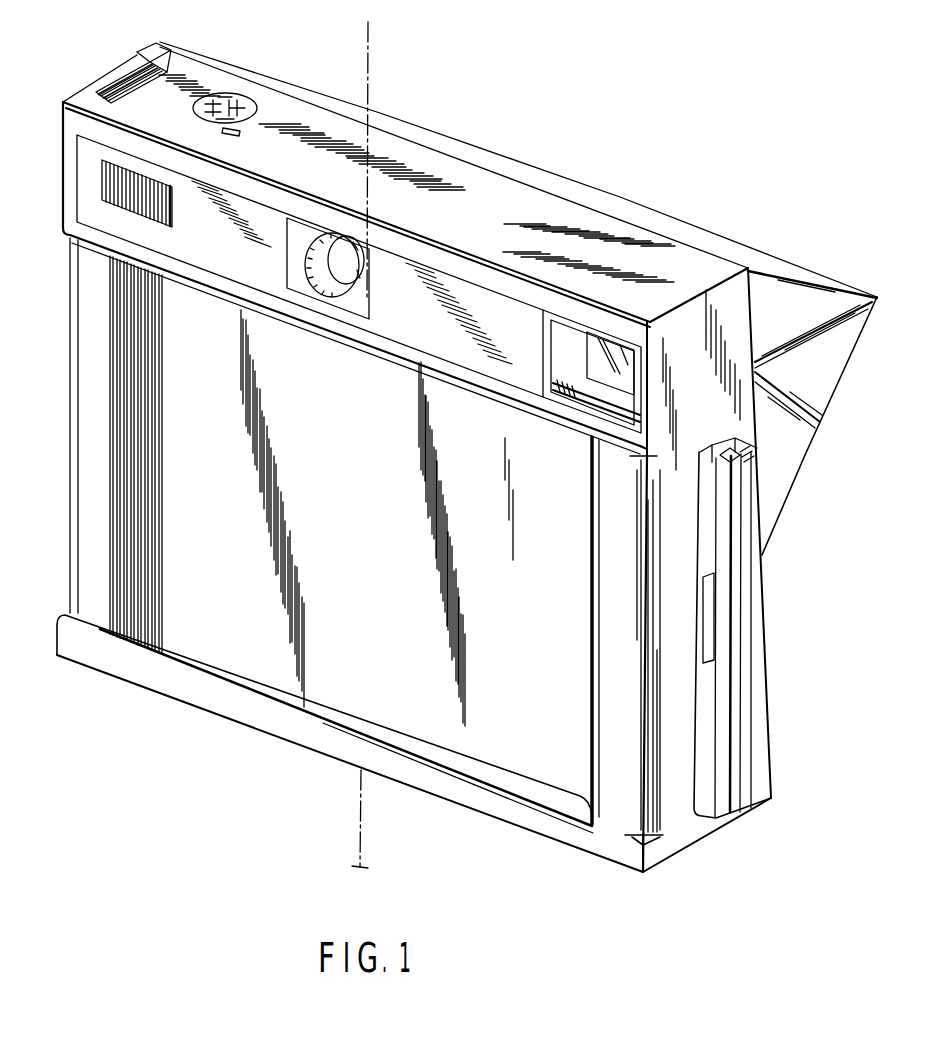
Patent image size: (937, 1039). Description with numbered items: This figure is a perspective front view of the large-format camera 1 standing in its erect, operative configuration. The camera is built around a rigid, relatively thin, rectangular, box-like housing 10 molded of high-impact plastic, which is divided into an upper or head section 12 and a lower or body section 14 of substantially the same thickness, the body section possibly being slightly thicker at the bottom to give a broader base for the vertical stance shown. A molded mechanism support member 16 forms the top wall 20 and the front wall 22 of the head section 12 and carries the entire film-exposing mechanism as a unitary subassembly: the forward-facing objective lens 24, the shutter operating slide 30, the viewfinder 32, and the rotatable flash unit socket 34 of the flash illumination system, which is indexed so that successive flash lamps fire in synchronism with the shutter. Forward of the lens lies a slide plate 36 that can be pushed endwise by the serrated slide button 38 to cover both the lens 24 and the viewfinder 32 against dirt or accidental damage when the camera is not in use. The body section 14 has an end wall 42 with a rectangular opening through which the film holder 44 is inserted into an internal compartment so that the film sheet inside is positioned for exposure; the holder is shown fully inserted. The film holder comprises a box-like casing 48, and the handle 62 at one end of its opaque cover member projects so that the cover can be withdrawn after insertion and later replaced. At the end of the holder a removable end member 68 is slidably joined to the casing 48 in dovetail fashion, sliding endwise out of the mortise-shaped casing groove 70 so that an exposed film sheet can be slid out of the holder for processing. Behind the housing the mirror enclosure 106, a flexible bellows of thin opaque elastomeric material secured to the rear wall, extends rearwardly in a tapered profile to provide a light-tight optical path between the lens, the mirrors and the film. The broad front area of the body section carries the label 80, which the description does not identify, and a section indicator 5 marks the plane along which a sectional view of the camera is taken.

The camera 1 is at (240, 756).
The section line 5- 5 is at (370, 25).
The housing 10 is at (190, 708).
The head section 12 is at (62, 214).
The body section 14 is at (88, 500).
The mechanism support member 16 is at (247, 44).
The top wall 20 is at (492, 212).
The front wall 22 is at (450, 262).
The objective lens 24 is at (362, 265).
The shutter operating slide 30 is at (114, 72).
The viewfinder 32 is at (597, 373).
The flash unit socket 34 is at (198, 111).
The slide plate 36 is at (530, 343).
The slide button 38 is at (145, 220).
The end wall 42 is at (678, 825).
The film holder 44 is at (688, 647).
The casing 48 is at (702, 706).
The handle 62 is at (733, 675).
The end member 68 is at (747, 733).
The casing groove 70 is at (734, 440).
The front grille panel 80 is at (352, 535).
The mirror enclosure 106 is at (797, 457).